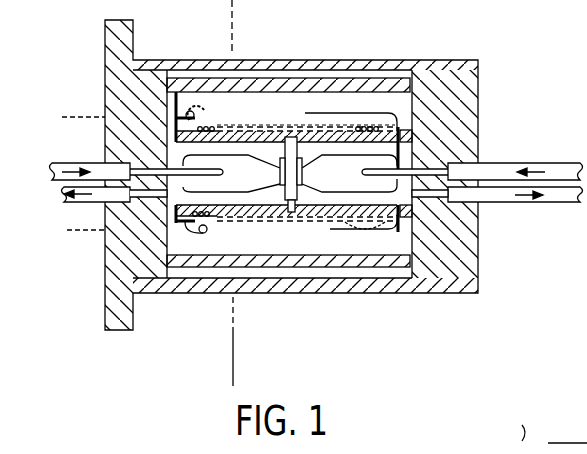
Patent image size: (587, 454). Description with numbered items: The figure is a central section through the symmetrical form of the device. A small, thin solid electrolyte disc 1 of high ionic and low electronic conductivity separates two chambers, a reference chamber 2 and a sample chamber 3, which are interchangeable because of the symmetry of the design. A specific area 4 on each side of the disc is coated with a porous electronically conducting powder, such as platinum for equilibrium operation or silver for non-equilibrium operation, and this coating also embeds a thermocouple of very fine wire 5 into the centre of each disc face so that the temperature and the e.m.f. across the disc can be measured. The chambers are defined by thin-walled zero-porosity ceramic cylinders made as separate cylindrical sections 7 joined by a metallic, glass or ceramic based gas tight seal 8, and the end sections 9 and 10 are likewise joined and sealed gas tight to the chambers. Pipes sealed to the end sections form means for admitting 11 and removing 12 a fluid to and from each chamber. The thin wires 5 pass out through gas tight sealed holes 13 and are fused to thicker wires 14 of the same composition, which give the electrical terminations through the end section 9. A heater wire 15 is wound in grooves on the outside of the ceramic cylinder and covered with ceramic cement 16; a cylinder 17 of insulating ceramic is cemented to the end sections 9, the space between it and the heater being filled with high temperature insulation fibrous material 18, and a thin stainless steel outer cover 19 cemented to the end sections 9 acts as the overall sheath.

The solid electrolyte disc 1 is at (287, 226).
The reference chamber 2 is at (440, 152).
The sample chamber 3 is at (232, 378).
The coated area 4 is at (338, 172).
The thermocouple wire 5 is at (262, 187).
The cylindrical section 7 is at (265, 130).
The gas tight seal 8 is at (293, 226).
The end section 9 is at (114, 74).
The end section 10 is at (466, 96).
The means for admitting a fluid 11 is at (54, 168).
The means for removing a fluid 12 is at (63, 200).
The holes 13 is at (180, 228).
The thicker wires 14 is at (188, 100).
The heater wire 15 is at (212, 127).
The ceramic cement 16 is at (372, 118).
The cylinder of insulating material 17 is at (243, 88).
The high temperature insulation fibrous material 18 is at (343, 98).
The outer cover 19 is at (283, 60).